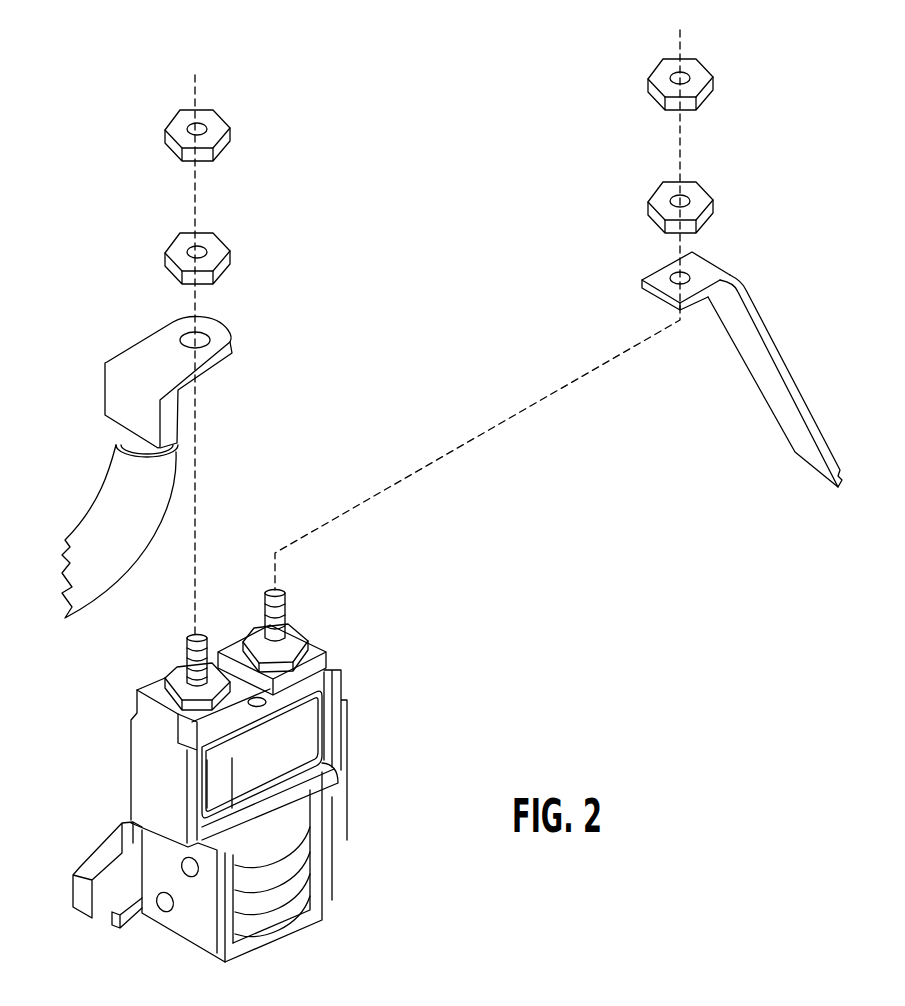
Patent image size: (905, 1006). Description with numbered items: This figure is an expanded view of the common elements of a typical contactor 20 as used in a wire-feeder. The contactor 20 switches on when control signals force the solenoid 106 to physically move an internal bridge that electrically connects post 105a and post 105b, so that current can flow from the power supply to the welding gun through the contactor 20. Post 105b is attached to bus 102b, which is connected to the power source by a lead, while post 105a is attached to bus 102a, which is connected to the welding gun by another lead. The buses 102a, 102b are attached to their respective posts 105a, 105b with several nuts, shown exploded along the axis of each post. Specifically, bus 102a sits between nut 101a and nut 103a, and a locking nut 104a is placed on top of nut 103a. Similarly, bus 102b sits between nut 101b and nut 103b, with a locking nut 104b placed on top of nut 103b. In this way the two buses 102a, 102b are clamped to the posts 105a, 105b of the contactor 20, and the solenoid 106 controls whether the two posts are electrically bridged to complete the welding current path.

The contactor 20 is at (158, 777).
The nut 101a is at (166, 675).
The nut 101b is at (295, 628).
The bus 102a is at (125, 390).
The bus 102b is at (703, 268).
The nut 103a is at (173, 242).
The nut 103b is at (698, 192).
The locking nut 104a is at (180, 121).
The locking nut 104b is at (692, 70).
The post 105a is at (222, 650).
The post 105b is at (280, 591).
The solenoid 106 is at (282, 902).